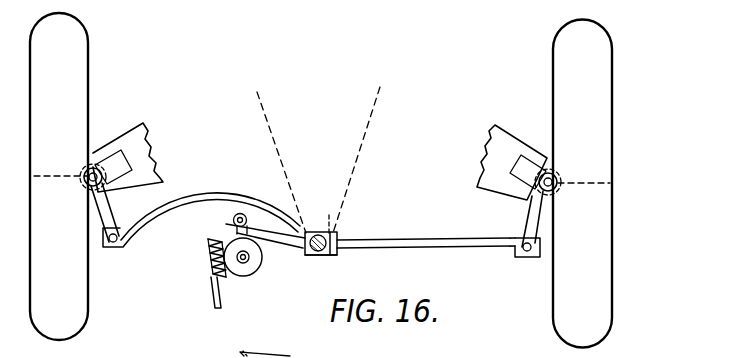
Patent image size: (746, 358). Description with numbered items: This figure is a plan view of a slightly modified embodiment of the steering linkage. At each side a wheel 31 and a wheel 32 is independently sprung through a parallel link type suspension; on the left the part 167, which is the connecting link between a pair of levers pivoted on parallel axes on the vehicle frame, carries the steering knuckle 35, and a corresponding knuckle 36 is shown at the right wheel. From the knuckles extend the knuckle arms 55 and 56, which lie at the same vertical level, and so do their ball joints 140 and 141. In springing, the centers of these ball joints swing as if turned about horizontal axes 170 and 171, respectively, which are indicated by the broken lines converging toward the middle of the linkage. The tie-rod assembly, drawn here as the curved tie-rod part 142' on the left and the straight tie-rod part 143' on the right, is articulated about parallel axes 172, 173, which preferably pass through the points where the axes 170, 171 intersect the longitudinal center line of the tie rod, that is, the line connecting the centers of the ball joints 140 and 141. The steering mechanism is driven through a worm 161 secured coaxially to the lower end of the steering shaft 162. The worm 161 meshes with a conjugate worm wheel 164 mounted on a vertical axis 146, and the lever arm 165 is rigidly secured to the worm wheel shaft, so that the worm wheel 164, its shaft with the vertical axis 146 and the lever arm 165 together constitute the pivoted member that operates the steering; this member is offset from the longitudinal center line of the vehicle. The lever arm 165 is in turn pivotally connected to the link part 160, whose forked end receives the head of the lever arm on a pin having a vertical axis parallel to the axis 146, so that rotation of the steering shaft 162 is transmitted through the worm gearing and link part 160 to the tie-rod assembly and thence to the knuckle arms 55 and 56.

The wheel 31 is at (77, 314).
The wheel 32 is at (602, 293).
The steering knuckle 35 is at (89, 184).
The right king pin 36 is at (556, 176).
The knuckle arm 55 is at (110, 212).
The knuckle arm 56 is at (537, 220).
The ball joint 140 is at (115, 248).
The ball joint 141 is at (526, 253).
The curved tie rod 142' is at (210, 204).
The tie rod 143' is at (426, 228).
The vertical axis 146 is at (244, 263).
The link part 160 is at (274, 236).
The worm 161 is at (208, 256).
The steering shaft 162 is at (211, 296).
The worm wheel 164 is at (257, 268).
The lever arm 165 is at (233, 223).
The part 167 is at (110, 170).
The horizontal axis 170 is at (277, 148).
The horizontal axis 171 is at (356, 176).
The axis of articulation 172 is at (312, 232).
The axis of articulation 173 is at (330, 258).